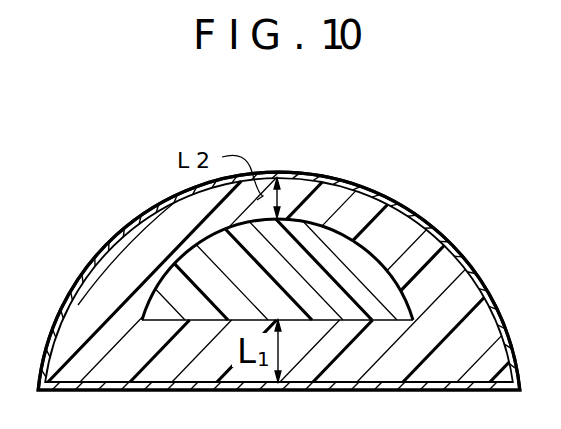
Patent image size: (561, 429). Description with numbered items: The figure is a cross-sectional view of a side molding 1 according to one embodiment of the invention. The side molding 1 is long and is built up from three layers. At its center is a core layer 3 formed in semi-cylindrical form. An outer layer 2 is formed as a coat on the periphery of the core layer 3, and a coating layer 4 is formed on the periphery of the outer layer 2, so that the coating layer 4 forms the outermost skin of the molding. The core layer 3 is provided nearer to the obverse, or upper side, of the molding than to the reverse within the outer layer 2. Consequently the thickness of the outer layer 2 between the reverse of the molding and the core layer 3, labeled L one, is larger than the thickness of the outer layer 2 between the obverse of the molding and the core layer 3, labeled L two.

The side molding 1 is at (343, 176).
The outer layer 2 is at (430, 259).
The core layer 3 is at (378, 299).
The coating layer 4 is at (400, 200).